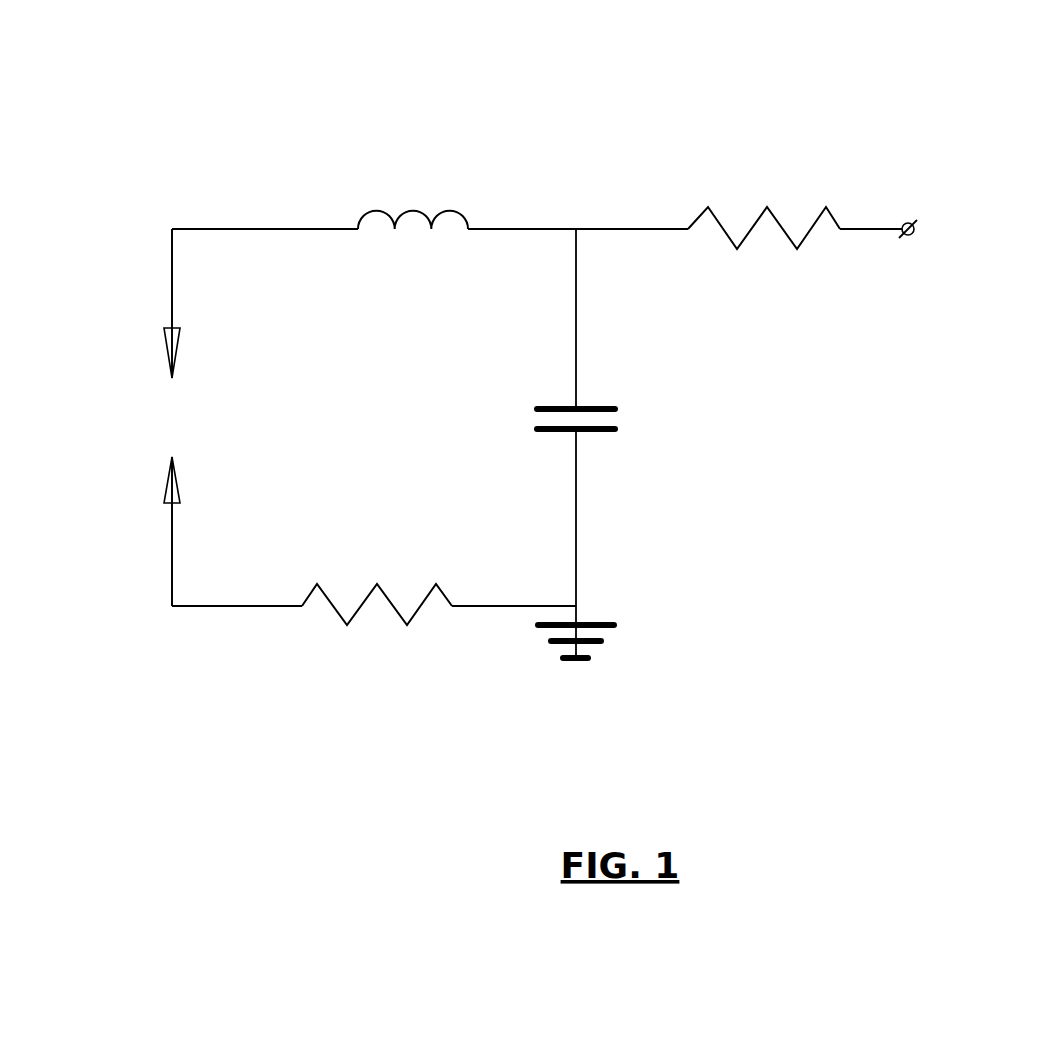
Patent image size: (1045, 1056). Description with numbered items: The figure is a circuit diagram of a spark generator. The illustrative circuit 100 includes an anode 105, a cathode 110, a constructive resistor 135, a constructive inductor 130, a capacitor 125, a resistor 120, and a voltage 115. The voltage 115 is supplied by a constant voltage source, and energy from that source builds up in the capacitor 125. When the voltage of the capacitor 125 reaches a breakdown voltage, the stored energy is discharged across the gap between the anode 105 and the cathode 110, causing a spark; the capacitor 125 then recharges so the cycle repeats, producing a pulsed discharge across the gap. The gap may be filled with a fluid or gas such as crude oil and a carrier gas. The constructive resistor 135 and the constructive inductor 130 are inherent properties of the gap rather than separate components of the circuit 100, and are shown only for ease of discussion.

The circuit 100 is at (212, 84).
The anode 105 is at (140, 348).
The cathode 110 is at (148, 466).
The voltage 115 is at (917, 205).
The resistor 120 is at (752, 190).
The capacitor 125 is at (646, 418).
The constructive inductor 130 is at (416, 193).
The constructive resistor 135 is at (379, 650).